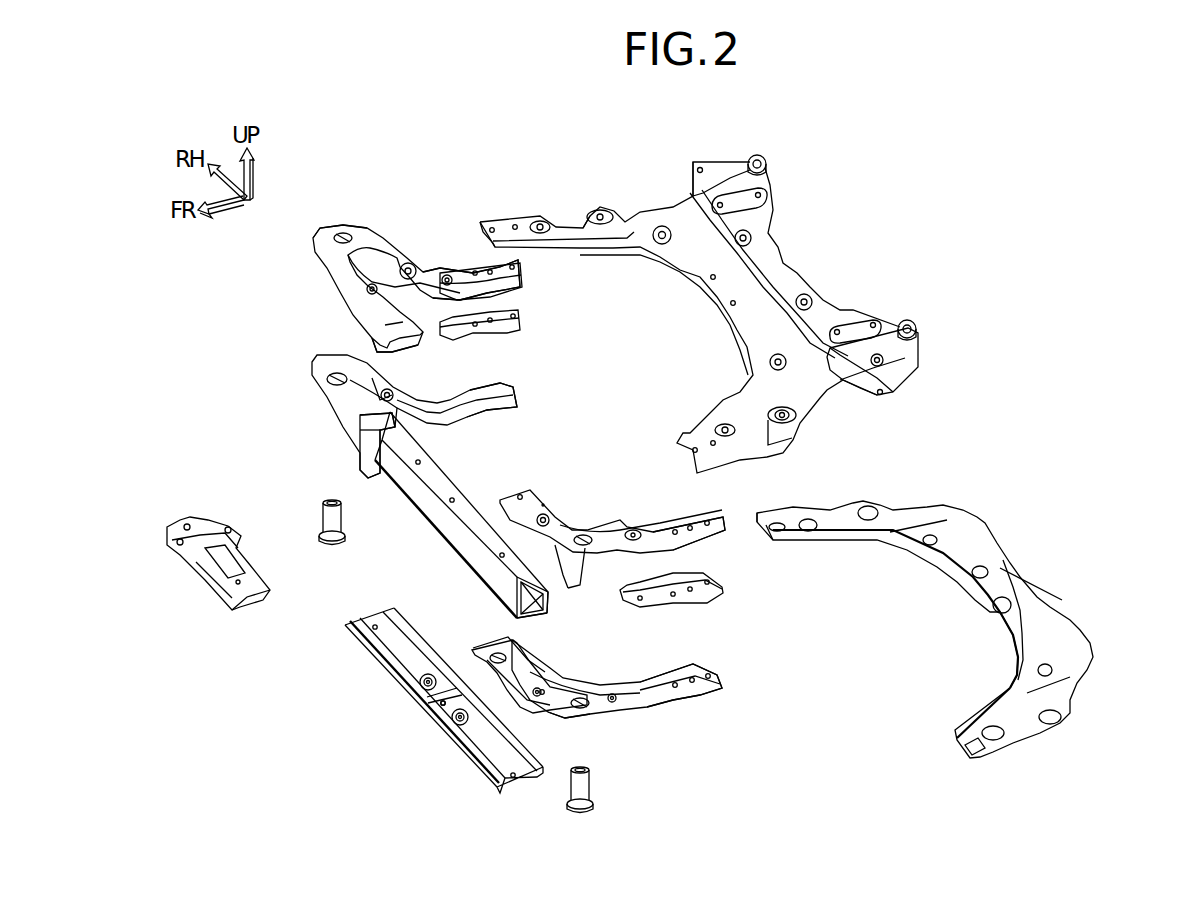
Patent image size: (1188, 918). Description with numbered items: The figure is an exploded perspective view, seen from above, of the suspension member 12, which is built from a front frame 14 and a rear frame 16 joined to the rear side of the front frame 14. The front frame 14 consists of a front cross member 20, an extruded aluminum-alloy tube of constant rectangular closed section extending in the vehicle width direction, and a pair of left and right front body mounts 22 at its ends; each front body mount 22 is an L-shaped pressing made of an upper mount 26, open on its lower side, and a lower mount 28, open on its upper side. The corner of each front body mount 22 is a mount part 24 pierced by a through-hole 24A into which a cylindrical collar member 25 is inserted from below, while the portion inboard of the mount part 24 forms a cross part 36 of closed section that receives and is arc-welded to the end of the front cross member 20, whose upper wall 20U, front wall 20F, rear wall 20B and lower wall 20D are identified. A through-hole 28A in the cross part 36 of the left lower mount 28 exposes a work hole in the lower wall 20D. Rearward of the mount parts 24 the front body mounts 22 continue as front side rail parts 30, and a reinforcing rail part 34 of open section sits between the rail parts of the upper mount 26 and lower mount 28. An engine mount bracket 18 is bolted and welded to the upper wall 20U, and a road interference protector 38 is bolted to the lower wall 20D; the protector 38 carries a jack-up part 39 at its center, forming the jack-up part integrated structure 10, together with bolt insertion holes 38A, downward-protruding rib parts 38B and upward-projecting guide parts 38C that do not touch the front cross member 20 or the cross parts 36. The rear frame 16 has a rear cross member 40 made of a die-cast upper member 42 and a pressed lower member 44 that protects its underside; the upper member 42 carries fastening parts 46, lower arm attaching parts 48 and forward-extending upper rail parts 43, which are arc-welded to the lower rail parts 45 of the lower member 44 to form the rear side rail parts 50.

The jack-up part integrated structure 10 is at (410, 712).
The suspension member 12 is at (738, 289).
The front frame 14 is at (483, 535).
The rear frame 16 is at (935, 303).
The engine mount bracket 18 is at (226, 522).
The front cross member 20 is at (493, 535).
The upper wall 20U is at (465, 511).
The front wall 20F is at (409, 497).
The rear wall 20B is at (548, 595).
The lower wall 20D is at (521, 617).
The front body mount 22 is at (226, 285).
The mount part 24 is at (330, 225).
The through-hole 24A is at (346, 234).
The collar member 25 is at (322, 516).
The upper mount 26 is at (313, 253).
The lower mount 28 is at (310, 372).
The through-hole 28A is at (499, 663).
The front side rail part 30 is at (482, 261).
The reinforcing rail part 34 is at (497, 328).
The cross part 36 is at (381, 347).
The road interference protector 38 is at (410, 712).
The bolt insertion hole 38A is at (376, 638).
The rib part 38B is at (390, 611).
The guide part 38C is at (378, 658).
The jack-up part 39 is at (424, 712).
The rear cross member 40 is at (783, 267).
The upper member 42 is at (694, 317).
The upper rail part 43 is at (577, 231).
The lower member 44 is at (957, 666).
The lower rail part 45 is at (813, 541).
The fastening part 46 is at (756, 156).
The lower arm attaching part 48 is at (717, 177).
The rear side rail part 50 is at (520, 209).